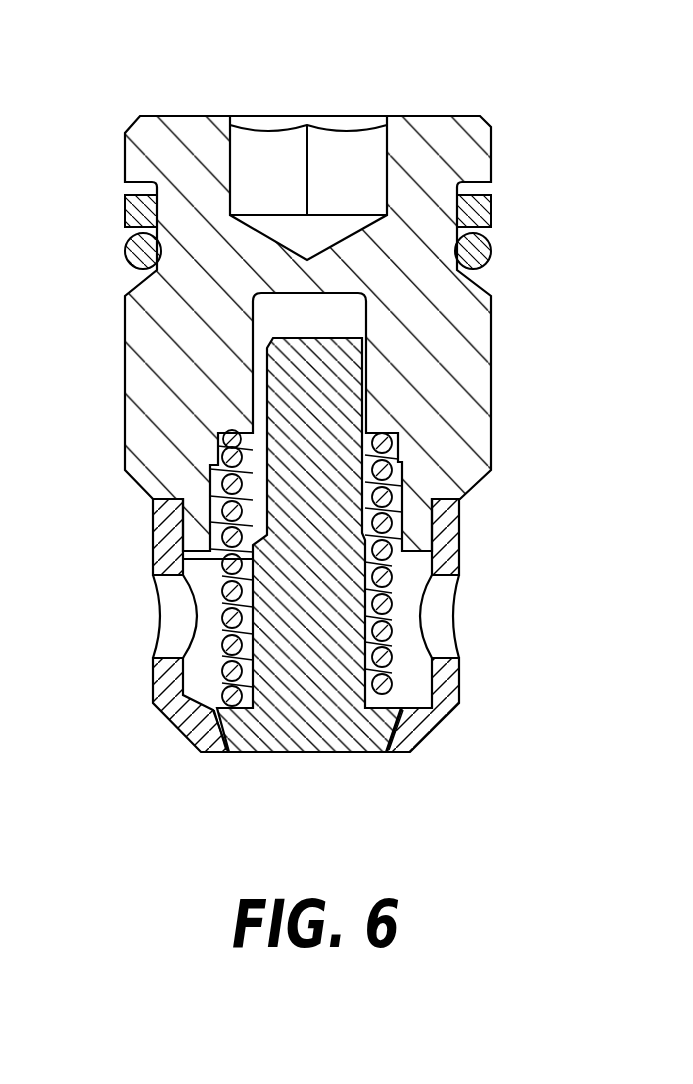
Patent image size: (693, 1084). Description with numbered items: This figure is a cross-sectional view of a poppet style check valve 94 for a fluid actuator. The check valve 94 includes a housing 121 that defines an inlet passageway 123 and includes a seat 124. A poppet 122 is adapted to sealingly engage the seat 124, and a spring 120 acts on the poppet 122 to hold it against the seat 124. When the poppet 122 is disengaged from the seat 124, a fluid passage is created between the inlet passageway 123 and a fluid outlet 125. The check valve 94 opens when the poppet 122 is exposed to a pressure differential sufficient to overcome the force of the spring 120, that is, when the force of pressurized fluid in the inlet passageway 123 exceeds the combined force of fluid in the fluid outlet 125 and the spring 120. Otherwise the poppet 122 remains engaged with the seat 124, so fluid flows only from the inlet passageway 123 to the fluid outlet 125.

The check valve 94 is at (510, 142).
The spring 120 is at (393, 606).
The housing 121 is at (185, 717).
The poppet 122 is at (307, 733).
The inlet passageway 123 is at (230, 752).
The seat 124 is at (385, 743).
The fluid outlet 125 is at (172, 613).